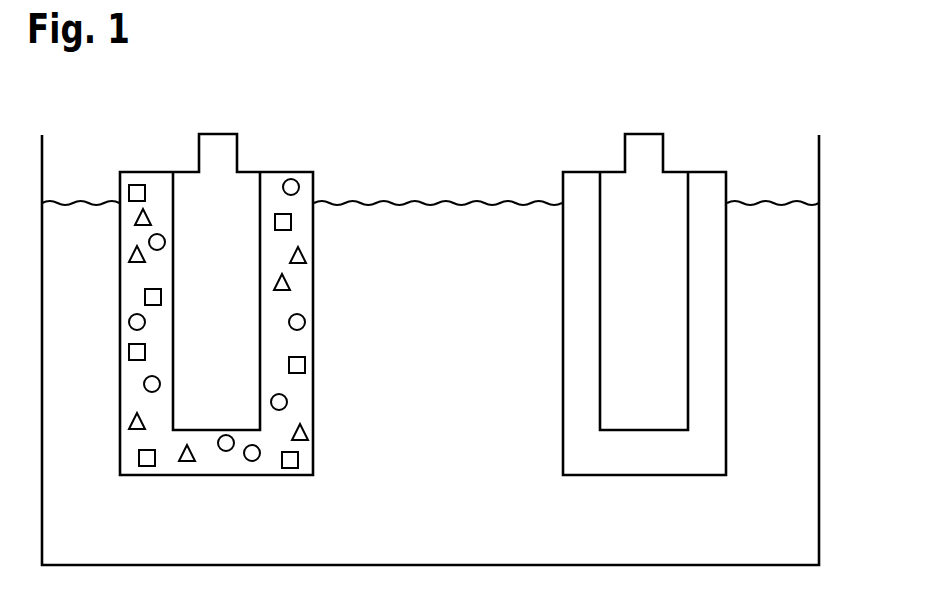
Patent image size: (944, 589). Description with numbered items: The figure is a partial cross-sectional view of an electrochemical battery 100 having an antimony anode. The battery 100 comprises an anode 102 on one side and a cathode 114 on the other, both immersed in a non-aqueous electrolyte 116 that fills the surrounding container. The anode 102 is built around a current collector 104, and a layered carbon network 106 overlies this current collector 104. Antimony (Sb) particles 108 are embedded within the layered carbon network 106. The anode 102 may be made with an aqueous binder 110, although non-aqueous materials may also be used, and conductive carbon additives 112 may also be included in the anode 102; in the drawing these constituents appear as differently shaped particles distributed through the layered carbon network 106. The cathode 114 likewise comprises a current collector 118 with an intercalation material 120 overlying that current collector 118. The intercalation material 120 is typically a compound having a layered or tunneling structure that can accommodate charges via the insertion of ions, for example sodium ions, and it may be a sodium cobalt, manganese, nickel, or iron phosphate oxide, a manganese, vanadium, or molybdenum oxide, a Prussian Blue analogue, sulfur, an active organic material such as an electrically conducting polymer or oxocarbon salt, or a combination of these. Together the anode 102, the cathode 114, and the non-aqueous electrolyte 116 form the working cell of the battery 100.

The battery 100 is at (603, 49).
The anode 102 is at (232, 100).
The current collector 104 is at (192, 187).
The layered carbon network 106 is at (299, 387).
The antimony (Sb) particles 108 is at (293, 181).
The aqueous binder 110 is at (186, 455).
The conductive carbon additives 112 is at (299, 460).
The cathode 114 is at (676, 99).
The non-aqueous electrolyte 116 is at (637, 540).
The current collector 118 is at (619, 187).
The intercalation material 120 is at (573, 297).